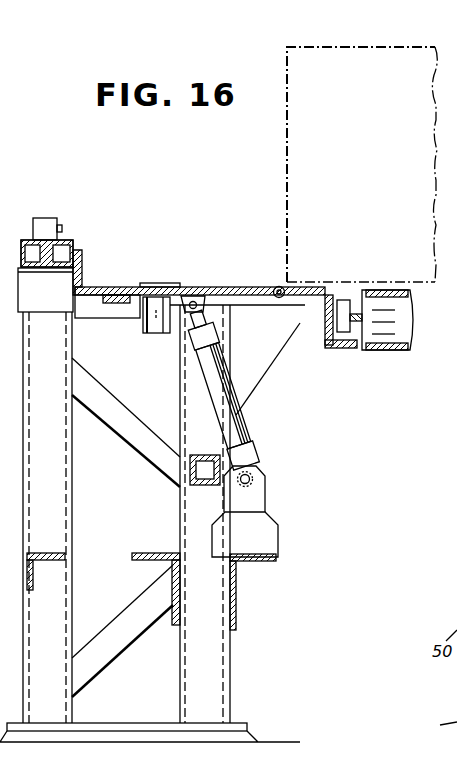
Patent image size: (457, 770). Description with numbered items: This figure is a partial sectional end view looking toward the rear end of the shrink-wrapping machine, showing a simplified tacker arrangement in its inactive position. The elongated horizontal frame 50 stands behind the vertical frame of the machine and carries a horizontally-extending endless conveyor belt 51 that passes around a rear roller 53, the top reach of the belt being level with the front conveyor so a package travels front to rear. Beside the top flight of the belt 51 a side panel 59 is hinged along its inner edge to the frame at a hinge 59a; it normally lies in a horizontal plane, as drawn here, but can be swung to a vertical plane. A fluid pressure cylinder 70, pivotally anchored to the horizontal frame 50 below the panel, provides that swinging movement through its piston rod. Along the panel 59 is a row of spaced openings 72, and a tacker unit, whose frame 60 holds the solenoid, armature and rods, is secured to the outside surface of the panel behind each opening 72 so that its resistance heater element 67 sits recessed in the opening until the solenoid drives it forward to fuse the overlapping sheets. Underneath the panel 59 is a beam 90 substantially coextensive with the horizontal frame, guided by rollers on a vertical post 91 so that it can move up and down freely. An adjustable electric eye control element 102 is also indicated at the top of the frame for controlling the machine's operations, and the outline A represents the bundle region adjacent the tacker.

The horizontal frame 50 is at (245, 648).
The conveyor belt 51 is at (391, 289).
The rear roller 53 is at (396, 351).
The side panel 59 is at (250, 297).
The hinge 59a is at (278, 300).
The tacker frame 60 is at (150, 336).
The resistance heater element 67 is at (160, 287).
The fluid pressure cylinder 70 is at (238, 413).
The opening 72 is at (188, 296).
The beam 90 is at (190, 478).
The vertical post 91 is at (180, 390).
The electric eye control element 102 is at (50, 225).
The vehicle body A is at (412, 68).